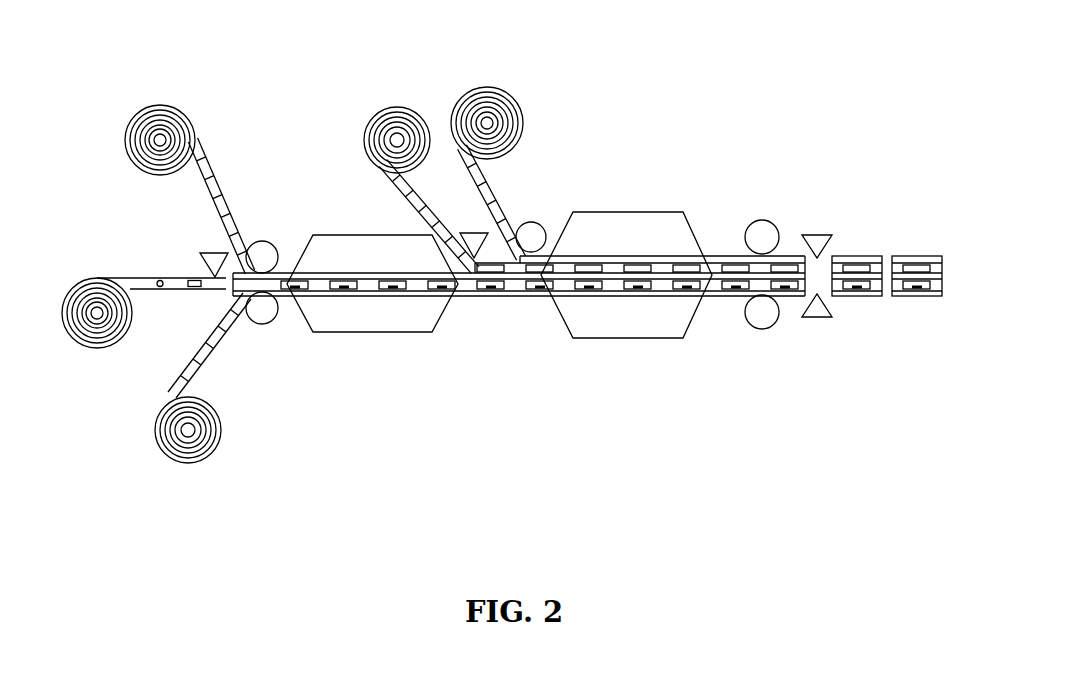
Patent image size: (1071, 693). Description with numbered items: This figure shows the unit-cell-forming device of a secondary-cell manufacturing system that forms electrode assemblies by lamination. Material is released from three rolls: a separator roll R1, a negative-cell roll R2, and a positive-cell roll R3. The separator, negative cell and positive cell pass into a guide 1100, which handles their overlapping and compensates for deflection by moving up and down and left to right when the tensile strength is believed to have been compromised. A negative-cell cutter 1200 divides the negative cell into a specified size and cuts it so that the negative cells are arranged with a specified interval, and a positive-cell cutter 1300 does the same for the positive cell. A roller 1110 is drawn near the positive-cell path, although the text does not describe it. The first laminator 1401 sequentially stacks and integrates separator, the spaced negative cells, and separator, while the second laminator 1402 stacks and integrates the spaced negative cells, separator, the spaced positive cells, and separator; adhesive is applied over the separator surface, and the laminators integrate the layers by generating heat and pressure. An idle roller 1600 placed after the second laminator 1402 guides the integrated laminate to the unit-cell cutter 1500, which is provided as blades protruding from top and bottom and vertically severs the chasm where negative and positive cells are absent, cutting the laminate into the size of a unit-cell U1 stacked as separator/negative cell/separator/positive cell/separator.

The separator roll R1 is at (140, 110).
The negative-cell roll R2 is at (90, 350).
The positive-cell roll R3 is at (380, 106).
The guide 1100 is at (278, 292).
The guide roller 1110 is at (535, 221).
The negative-cell cutter 1200 is at (206, 257).
The positive-cell cutter 1300 is at (471, 231).
The Laminator 1 1401 is at (392, 318).
The Laminator 2 1402 is at (647, 222).
The unit-cell cutter 1500 is at (820, 232).
The idle roller 1600 is at (760, 220).
The unit-cell U1 is at (860, 256).